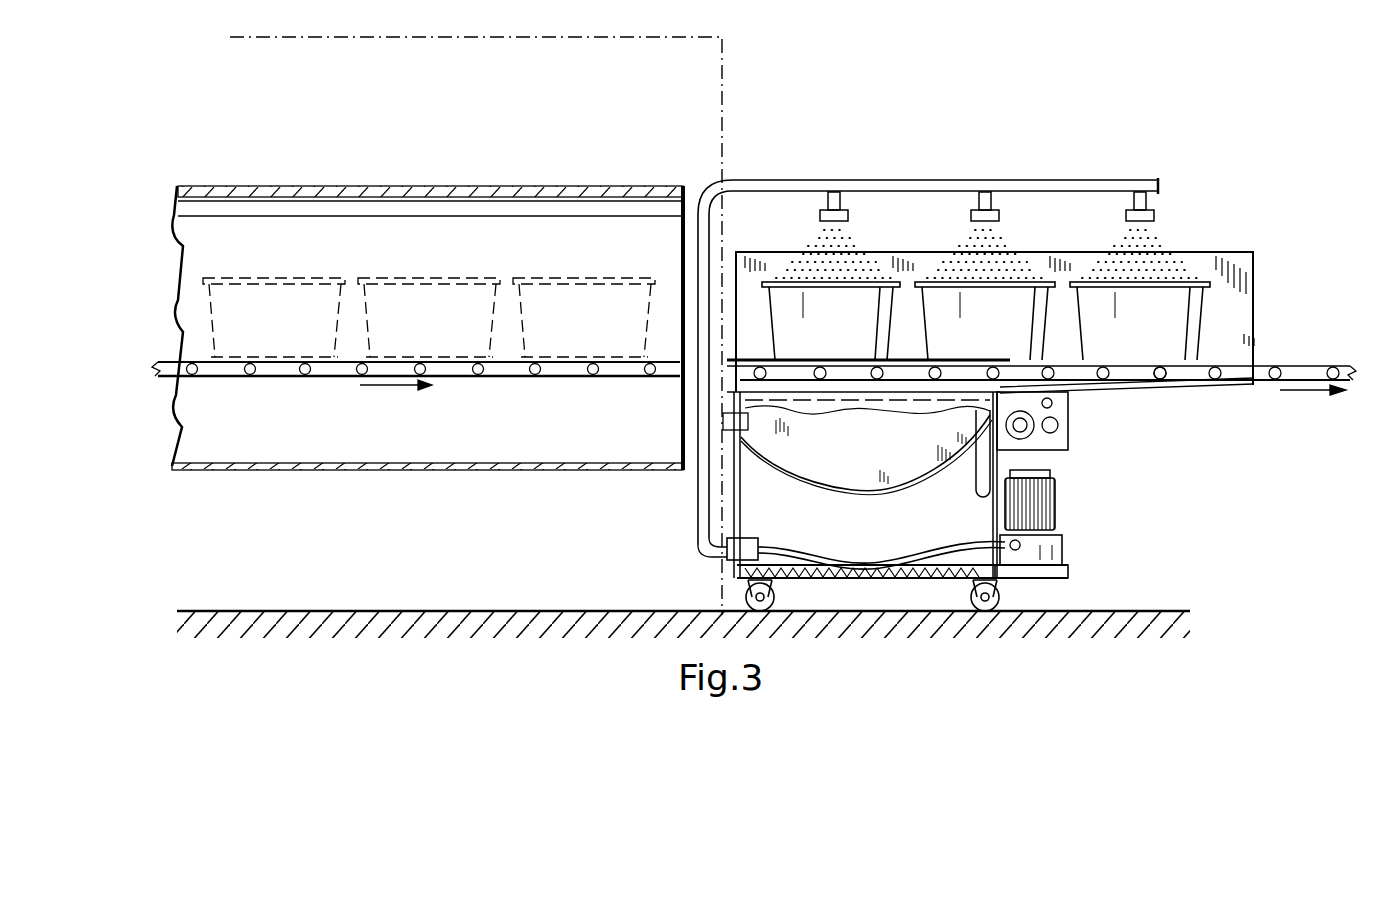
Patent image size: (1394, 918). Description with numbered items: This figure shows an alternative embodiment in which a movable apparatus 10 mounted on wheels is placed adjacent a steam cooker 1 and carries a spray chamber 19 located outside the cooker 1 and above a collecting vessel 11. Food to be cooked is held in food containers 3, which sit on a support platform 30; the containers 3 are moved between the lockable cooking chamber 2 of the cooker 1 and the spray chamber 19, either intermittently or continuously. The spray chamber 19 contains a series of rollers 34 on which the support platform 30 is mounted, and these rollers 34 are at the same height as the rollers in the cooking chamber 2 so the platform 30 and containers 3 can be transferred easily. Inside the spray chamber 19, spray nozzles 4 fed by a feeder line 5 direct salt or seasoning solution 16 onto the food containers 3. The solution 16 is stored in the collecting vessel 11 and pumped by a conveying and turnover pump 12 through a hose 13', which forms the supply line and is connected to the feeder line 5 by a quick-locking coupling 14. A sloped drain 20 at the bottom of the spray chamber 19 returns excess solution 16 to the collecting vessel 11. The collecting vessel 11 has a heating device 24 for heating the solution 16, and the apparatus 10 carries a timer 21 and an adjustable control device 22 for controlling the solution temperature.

The cooker 1 is at (678, 179).
The cooking chamber 2 is at (477, 228).
The food containers 3 is at (292, 298).
The spray nozzles 4 is at (1155, 218).
The feeder line 5 is at (928, 184).
The apparatus 10 is at (734, 522).
The collecting vessel 11 is at (790, 529).
The conveying and turnover pump 12 is at (1060, 513).
The hose 13' is at (889, 489).
The quick-locking coupling 14 is at (733, 558).
The salt or seasoning solution 16 is at (810, 398).
The spray chamber 19 is at (1240, 264).
The sloped drain 20 is at (1022, 358).
The timer 21 is at (1034, 440).
The adjustable control device 22 is at (1062, 418).
The heating device 24 is at (850, 575).
The support platform 30 is at (1202, 364).
The rollers 34 is at (1162, 380).